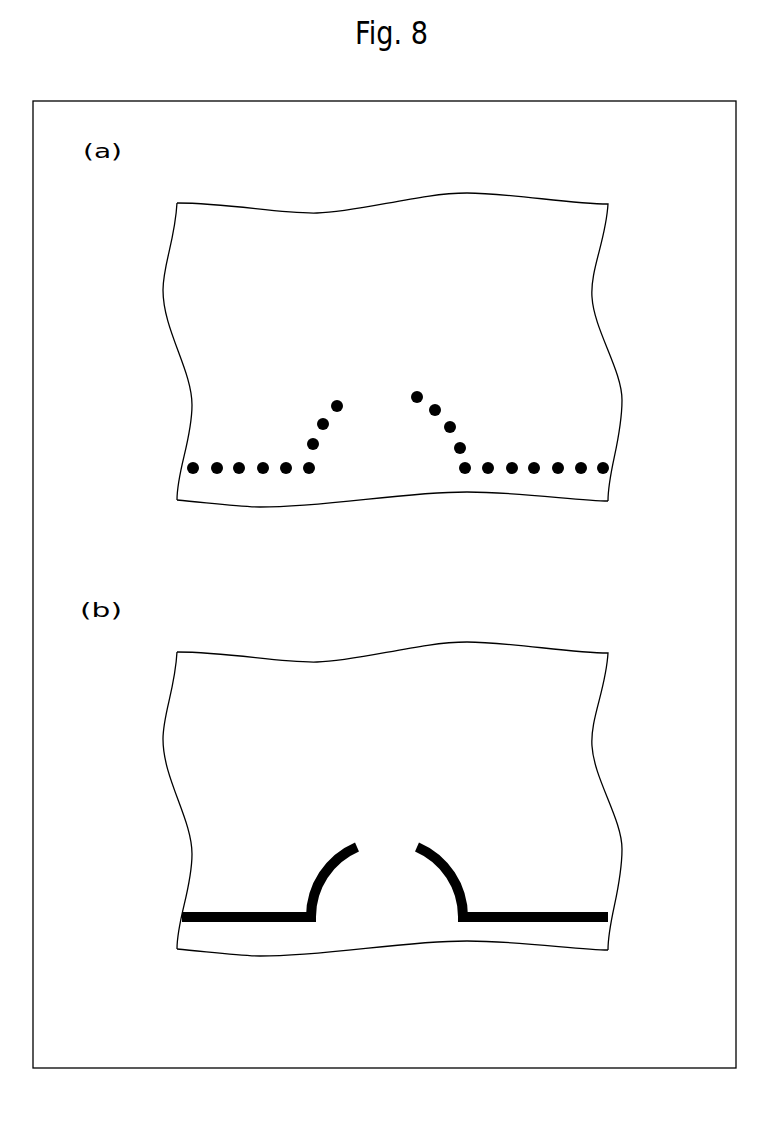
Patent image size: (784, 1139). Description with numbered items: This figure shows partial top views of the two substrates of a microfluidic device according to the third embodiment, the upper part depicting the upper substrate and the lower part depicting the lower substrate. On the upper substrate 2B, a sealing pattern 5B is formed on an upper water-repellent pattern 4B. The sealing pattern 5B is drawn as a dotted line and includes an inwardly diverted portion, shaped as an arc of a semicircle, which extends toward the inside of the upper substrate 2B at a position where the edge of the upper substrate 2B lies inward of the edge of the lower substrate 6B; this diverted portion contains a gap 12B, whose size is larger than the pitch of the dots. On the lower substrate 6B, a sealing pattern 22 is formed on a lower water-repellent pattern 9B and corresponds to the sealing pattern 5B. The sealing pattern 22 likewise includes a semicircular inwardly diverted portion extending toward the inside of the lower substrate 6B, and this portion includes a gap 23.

The upper water-repellent pattern 4B is at (610, 425).
The upper substrate 2B is at (598, 502).
The sealing pattern 5B is at (286, 474).
The gap 12B is at (343, 415).
The lower water-repellent pattern 9B is at (578, 747).
The lower substrate 6B is at (572, 951).
The sealing pattern 22 is at (290, 922).
The gap 23 is at (358, 863).